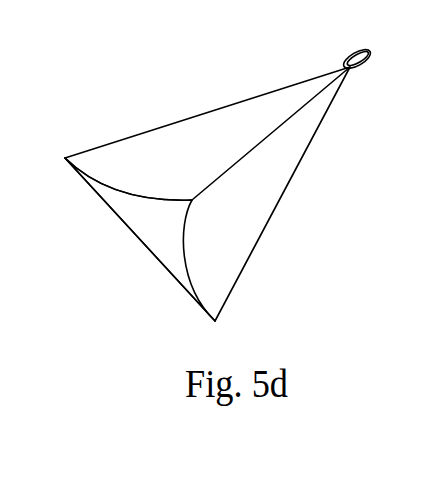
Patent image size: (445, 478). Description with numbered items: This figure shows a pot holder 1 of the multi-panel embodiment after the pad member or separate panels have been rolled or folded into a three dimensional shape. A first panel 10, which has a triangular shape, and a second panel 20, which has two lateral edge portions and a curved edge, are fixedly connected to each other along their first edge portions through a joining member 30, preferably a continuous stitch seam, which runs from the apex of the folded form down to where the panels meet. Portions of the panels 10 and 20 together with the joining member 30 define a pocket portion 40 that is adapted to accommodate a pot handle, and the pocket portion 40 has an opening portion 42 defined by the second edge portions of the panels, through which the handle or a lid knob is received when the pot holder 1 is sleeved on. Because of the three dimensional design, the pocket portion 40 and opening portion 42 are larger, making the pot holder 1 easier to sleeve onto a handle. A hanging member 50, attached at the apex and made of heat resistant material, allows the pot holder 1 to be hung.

The pot holder 1 is at (255, 181).
The first panel 10 is at (172, 236).
The second panel 20 is at (192, 178).
The joining member 30 is at (232, 159).
The pocket portion 40 is at (172, 255).
The opening portion 42 is at (132, 170).
The hanging member 50 is at (370, 51).